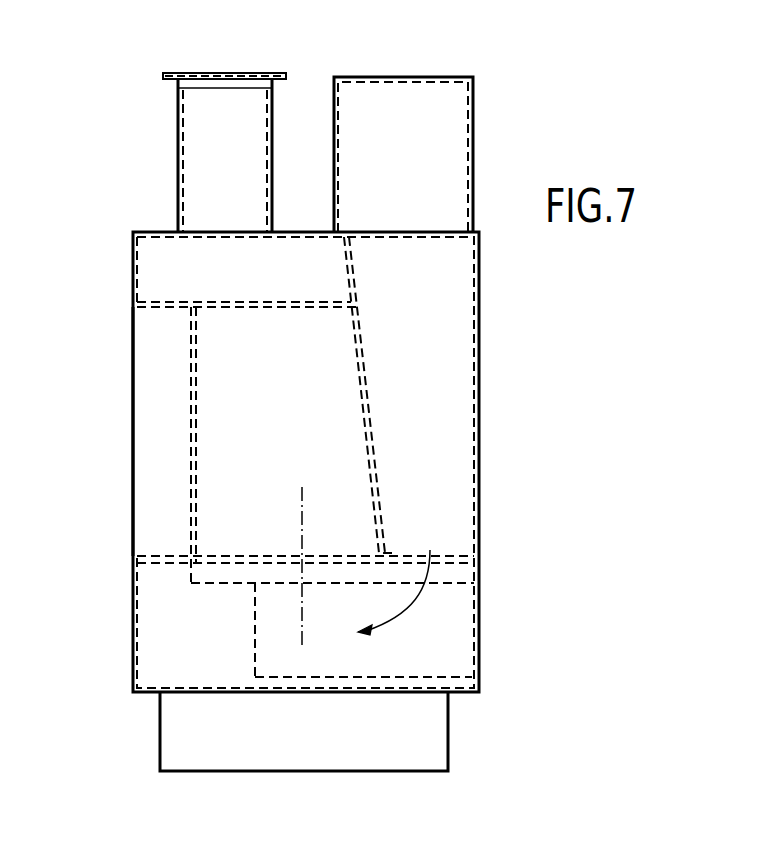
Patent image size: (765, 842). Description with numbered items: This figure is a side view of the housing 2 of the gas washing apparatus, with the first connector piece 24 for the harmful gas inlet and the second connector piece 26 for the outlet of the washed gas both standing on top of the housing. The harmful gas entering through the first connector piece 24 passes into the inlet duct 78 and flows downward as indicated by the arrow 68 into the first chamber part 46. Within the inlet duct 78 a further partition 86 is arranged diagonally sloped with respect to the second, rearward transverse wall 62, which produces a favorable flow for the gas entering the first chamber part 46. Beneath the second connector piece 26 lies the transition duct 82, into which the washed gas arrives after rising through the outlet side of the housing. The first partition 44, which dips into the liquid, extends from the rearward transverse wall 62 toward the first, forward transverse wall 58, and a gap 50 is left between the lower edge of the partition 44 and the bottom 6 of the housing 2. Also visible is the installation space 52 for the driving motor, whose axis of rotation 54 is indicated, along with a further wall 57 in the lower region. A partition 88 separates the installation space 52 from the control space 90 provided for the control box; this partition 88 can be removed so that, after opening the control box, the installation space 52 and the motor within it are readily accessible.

The housing 2 is at (121, 349).
The bottom 6 is at (465, 695).
The first connector piece 24 is at (473, 117).
The second connector piece 26 is at (178, 160).
The first partition 44 is at (462, 648).
The first chamber part 46 is at (240, 655).
The gap 50 is at (383, 683).
The installation space 52 is at (235, 442).
The axis of rotation 54 is at (302, 530).
The partition wall 57 is at (255, 617).
The first transverse wall 58 is at (133, 582).
The second transverse wall 62 is at (479, 465).
The arrow 68 is at (423, 598).
The inlet duct 78 is at (417, 302).
The transition duct 82 is at (145, 277).
The partition 86 is at (365, 388).
The partition 88 is at (192, 340).
The control space 90 is at (155, 400).